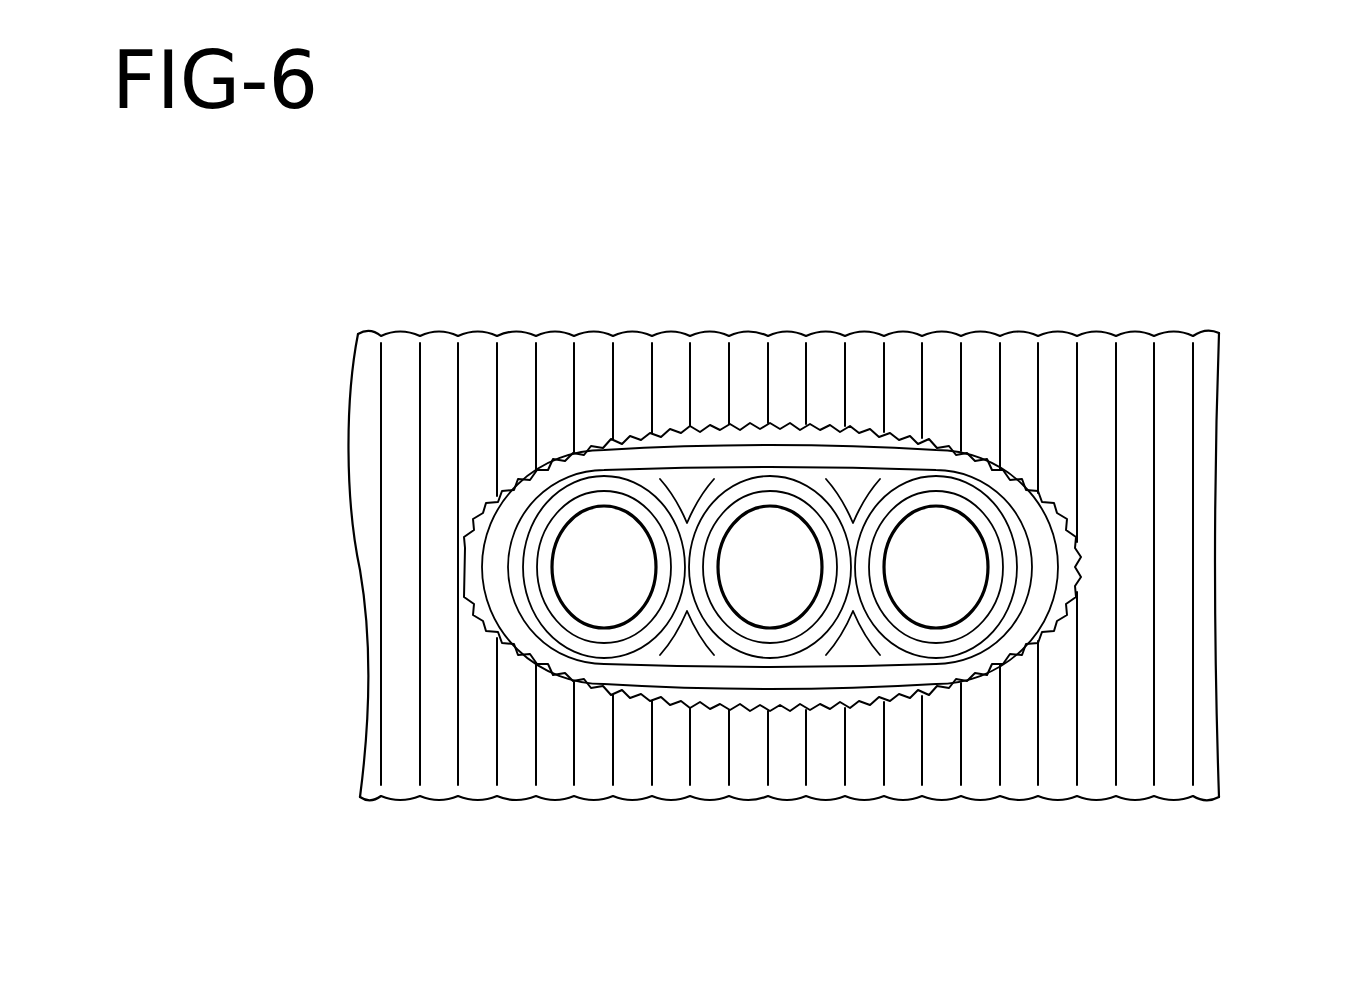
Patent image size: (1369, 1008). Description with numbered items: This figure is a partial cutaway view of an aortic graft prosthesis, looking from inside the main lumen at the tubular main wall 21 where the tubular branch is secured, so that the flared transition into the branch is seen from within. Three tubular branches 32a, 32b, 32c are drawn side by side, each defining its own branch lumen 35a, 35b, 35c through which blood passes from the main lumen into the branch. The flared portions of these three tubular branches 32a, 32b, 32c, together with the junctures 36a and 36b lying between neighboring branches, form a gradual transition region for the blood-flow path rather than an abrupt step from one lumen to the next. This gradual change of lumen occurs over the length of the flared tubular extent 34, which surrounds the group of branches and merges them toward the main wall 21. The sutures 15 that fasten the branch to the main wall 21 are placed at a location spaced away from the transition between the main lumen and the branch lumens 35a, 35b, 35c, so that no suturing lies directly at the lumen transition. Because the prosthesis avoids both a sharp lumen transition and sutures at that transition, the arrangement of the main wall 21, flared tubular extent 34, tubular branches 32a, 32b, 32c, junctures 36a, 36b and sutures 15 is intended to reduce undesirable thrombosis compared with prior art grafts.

The tubular main wall 21 is at (1202, 373).
The sutures 15 is at (942, 690).
The flared tubular extent 34 is at (893, 668).
The juncture 36a is at (690, 560).
The juncture 36b is at (855, 575).
The tubular branch 32a is at (658, 570).
The tubular branch 32b is at (824, 570).
The tubular branch 32c is at (990, 570).
The branch lumen 35a is at (605, 567).
The branch lumen 35b is at (771, 567).
The branch lumen 35c is at (937, 567).